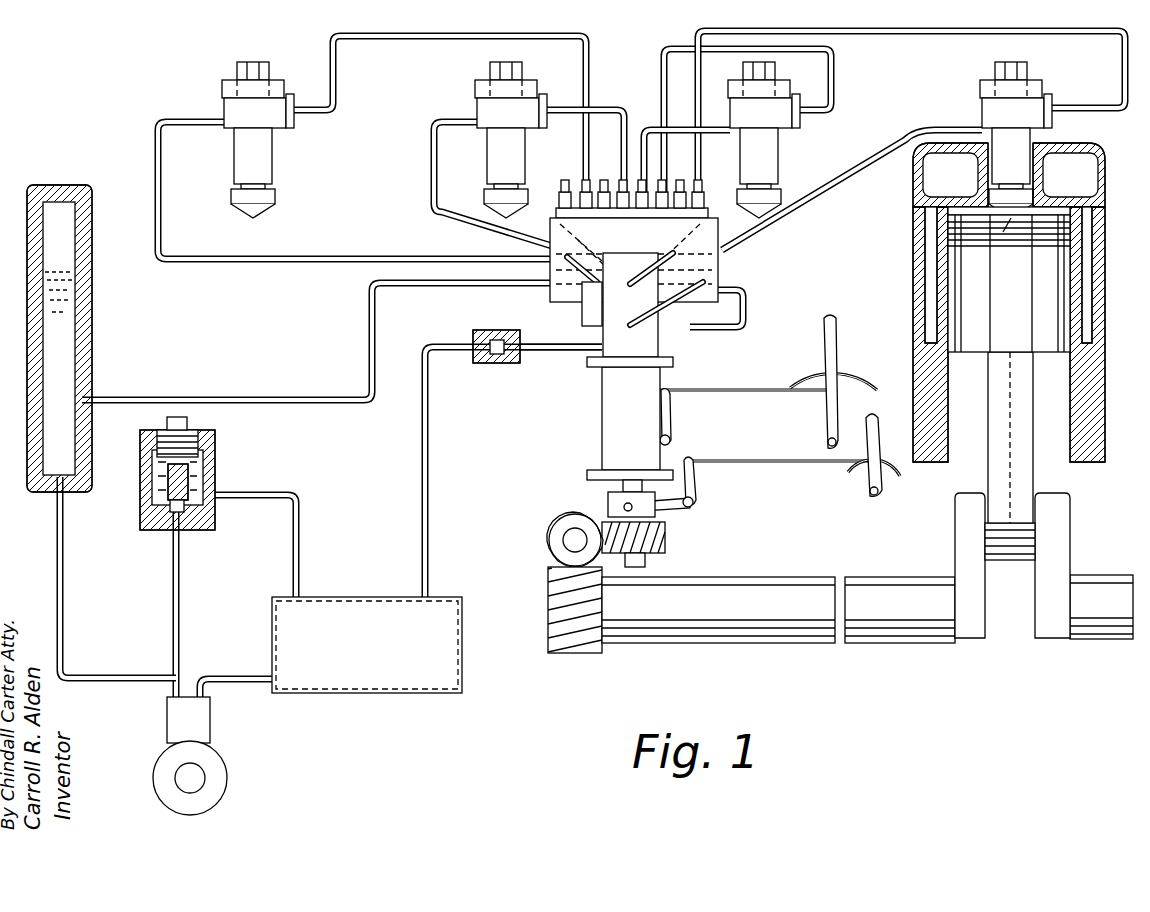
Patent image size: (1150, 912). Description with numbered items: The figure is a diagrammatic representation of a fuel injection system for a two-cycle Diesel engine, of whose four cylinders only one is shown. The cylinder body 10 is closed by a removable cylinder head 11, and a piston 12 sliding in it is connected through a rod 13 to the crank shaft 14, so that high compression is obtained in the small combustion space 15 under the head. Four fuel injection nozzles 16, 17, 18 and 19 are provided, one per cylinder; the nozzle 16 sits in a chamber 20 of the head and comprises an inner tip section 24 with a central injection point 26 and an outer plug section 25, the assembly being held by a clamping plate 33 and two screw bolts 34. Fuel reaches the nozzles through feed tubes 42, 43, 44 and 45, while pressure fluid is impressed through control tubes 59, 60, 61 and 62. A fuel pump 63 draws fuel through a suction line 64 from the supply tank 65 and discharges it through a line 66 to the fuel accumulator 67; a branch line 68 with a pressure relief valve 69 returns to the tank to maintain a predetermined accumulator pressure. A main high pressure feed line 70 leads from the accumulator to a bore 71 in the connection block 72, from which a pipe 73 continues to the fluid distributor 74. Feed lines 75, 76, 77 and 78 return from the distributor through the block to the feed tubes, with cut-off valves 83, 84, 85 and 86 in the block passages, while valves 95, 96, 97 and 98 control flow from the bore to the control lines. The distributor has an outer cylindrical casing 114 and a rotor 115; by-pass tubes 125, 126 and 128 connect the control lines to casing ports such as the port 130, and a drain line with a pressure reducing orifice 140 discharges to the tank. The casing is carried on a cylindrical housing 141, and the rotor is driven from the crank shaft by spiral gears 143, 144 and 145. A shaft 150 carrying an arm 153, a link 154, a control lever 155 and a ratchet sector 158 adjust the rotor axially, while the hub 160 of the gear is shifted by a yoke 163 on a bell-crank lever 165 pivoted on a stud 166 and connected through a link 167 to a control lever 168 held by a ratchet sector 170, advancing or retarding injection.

The cylinder body 10 is at (1023, 302).
The cylinder head 11 is at (1100, 172).
The piston 12 is at (1070, 280).
The rod 13 is at (1022, 478).
The crank shaft 14 is at (1094, 578).
The combustion space 15 is at (1066, 212).
The fuel injection nozzle 16 is at (1027, 126).
The fuel injection nozzle 17 is at (780, 148).
The fuel injection nozzle 18 is at (528, 146).
The fuel injection nozzle 19 is at (271, 132).
The chamber 20 is at (1052, 140).
The inner tip section 24 is at (277, 194).
The outer plug section 25 is at (274, 156).
The central injection point 26 is at (1005, 226).
The clamping plate 33 is at (1040, 80).
The screw bolts 34 is at (1020, 62).
The fuel feed tube 42 is at (938, 124).
The feed tube 43 is at (710, 124).
The feed tube 44 is at (446, 124).
The feed tube 45 is at (192, 122).
The control tube 59 is at (1122, 63).
The control tube 60 is at (836, 79).
The control tube 61 is at (600, 108).
The control tube 62 is at (336, 100).
The fuel pump 63 is at (228, 768).
The suction line 64 is at (246, 682).
The fuel supply tank 65 is at (352, 680).
The line 66 is at (124, 670).
The fuel accumulator 67 is at (92, 456).
The line 68 is at (180, 612).
The pressure relief valve 69 is at (216, 468).
The main high pressure feed line 70 is at (232, 396).
The bore 71 is at (548, 292).
The connection block 72 is at (641, 310).
The pipe 73 is at (745, 304).
The fluid distributor 74 is at (600, 416).
The feed line 75 is at (665, 256).
The feed line 76 is at (670, 285).
The feed line 77 is at (610, 262).
The feed line 78 is at (578, 268).
The valve 83 is at (666, 190).
The valve 84 is at (650, 188).
The valve 85 is at (604, 190).
The valve 86 is at (572, 196).
The valve 95 is at (702, 196).
The valve 96 is at (662, 226).
The valve 97 is at (626, 226).
The valve 98 is at (590, 226).
The outer cylindrical casing 114 is at (662, 358).
The rotor 115 is at (642, 572).
The by-pass tube 125 is at (640, 322).
The by-pass tube 126 is at (672, 312).
The by-pass tube 128 is at (590, 326).
The peripheral port 130 is at (556, 346).
The pressure reducing orifice 140 is at (492, 363).
The cylindrical housing 141 is at (604, 442).
The spiral gear 143 is at (668, 542).
The spiral gear 144 is at (548, 543).
The spiral gear 145 is at (566, 654).
The shaft 150 is at (671, 440).
The arm 153 is at (672, 418).
The link 154 is at (754, 392).
The control lever 155 is at (840, 330).
The ratchet sector 158 is at (850, 383).
The hub 160 is at (606, 494).
The yoke 163 is at (665, 508).
The bell-crank lever 165 is at (696, 482).
The stud 166 is at (694, 501).
The link 167 is at (790, 463).
The control lever 168 is at (878, 440).
The ratchet sector 170 is at (888, 476).